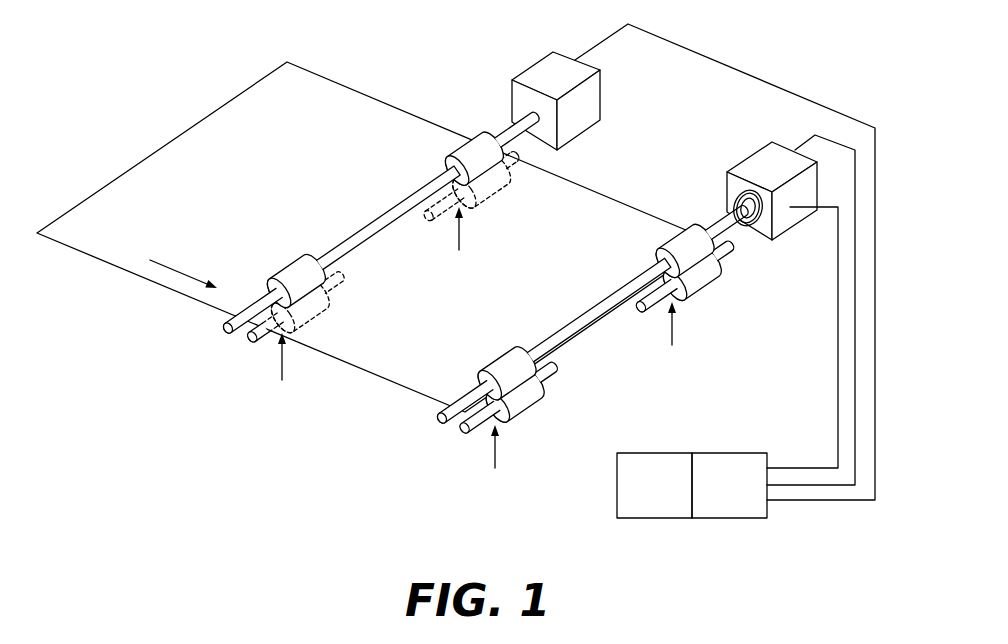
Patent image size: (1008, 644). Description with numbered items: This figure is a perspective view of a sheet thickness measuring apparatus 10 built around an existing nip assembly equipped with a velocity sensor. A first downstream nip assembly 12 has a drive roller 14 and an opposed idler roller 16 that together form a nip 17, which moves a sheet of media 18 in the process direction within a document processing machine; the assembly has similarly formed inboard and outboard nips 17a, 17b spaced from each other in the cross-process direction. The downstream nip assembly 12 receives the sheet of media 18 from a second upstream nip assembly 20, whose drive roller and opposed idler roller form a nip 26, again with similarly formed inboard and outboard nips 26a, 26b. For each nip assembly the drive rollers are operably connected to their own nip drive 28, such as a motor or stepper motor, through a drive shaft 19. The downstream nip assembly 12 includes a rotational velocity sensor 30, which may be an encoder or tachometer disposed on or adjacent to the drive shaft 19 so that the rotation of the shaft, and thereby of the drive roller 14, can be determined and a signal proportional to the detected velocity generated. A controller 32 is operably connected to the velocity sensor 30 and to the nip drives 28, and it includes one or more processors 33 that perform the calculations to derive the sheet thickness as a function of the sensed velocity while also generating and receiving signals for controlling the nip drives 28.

The sheet thickness measuring apparatus 10 is at (205, 428).
The first downstream nip assembly 12 is at (440, 442).
The drive roller 14 is at (678, 240).
The idler roller 16 is at (697, 287).
The nip 17 is at (720, 287).
The inboard nip 17a is at (715, 268).
The outboard nip 17b is at (520, 393).
The sheet of media 18 is at (197, 140).
The drive shaft 19 is at (507, 136).
The second upstream nip assembly 20 is at (211, 348).
The nip 26 is at (492, 190).
The inboard nip 26a is at (482, 183).
The outboard nip 26b is at (308, 305).
The nip drive 28 is at (582, 123).
The rotational velocity sensor 30 is at (753, 230).
The controller 32 is at (655, 520).
The processor 33 is at (728, 520).